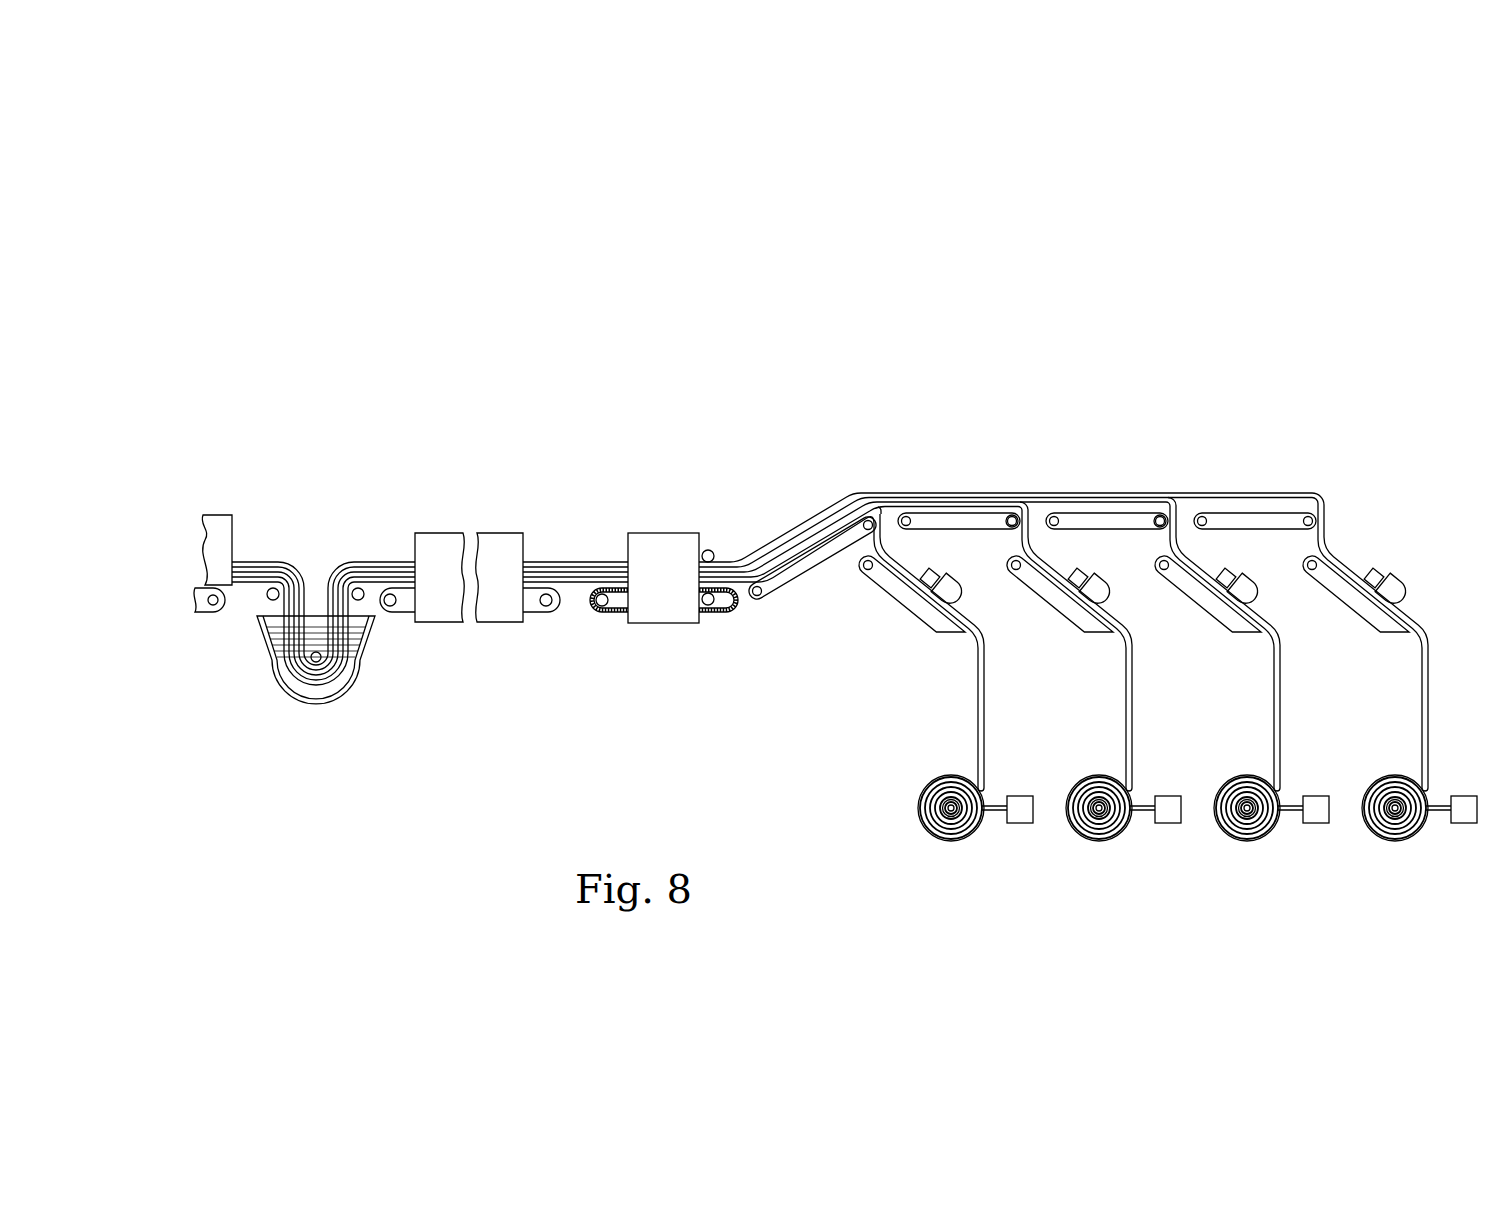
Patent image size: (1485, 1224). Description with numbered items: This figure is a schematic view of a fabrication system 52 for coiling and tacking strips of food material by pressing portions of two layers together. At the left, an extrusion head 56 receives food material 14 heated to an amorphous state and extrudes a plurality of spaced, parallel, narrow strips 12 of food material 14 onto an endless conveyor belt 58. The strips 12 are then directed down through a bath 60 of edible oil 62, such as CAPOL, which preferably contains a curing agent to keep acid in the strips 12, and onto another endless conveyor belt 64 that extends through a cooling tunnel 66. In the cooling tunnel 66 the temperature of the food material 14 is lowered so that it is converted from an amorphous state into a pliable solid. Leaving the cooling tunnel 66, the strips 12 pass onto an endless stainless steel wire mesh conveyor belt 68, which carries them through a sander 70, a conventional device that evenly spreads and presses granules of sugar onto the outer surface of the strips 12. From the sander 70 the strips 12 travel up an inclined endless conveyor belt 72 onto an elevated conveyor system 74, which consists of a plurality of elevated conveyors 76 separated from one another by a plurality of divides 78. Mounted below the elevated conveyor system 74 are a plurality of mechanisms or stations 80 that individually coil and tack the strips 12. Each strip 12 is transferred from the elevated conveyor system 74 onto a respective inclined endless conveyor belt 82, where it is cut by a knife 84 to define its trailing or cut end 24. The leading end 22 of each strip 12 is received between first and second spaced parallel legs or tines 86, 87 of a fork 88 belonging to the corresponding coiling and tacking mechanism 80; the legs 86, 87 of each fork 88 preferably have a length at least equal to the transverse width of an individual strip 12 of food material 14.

The strips 12 is at (243, 563).
The food material 14 is at (287, 560).
The leading end 22 is at (965, 797).
The cut end 24 is at (962, 592).
The fabrication system 52 is at (1050, 417).
The extrusion head 56 is at (220, 520).
The endless conveyor belt 58 is at (207, 614).
The bath 60 is at (312, 720).
The edible oil 62 is at (280, 690).
The endless conveyor belt 64 is at (403, 620).
The cooling tunnel 66 is at (478, 530).
The stainless steel wire mesh conveyor belt 68 is at (610, 622).
The sander 70 is at (647, 547).
The inclined endless conveyor belt 72 is at (805, 570).
The elevated conveyor system 74 is at (860, 436).
The elevated conveyors 76 is at (968, 522).
The divides 78 is at (1040, 518).
The coiling and tacking mechanisms 80 is at (917, 836).
The inclined endless conveyor belt 82 is at (905, 606).
The knife 84 is at (934, 578).
The first leg 86 is at (940, 810).
The second leg 87 is at (951, 822).
The fork 88 is at (915, 791).